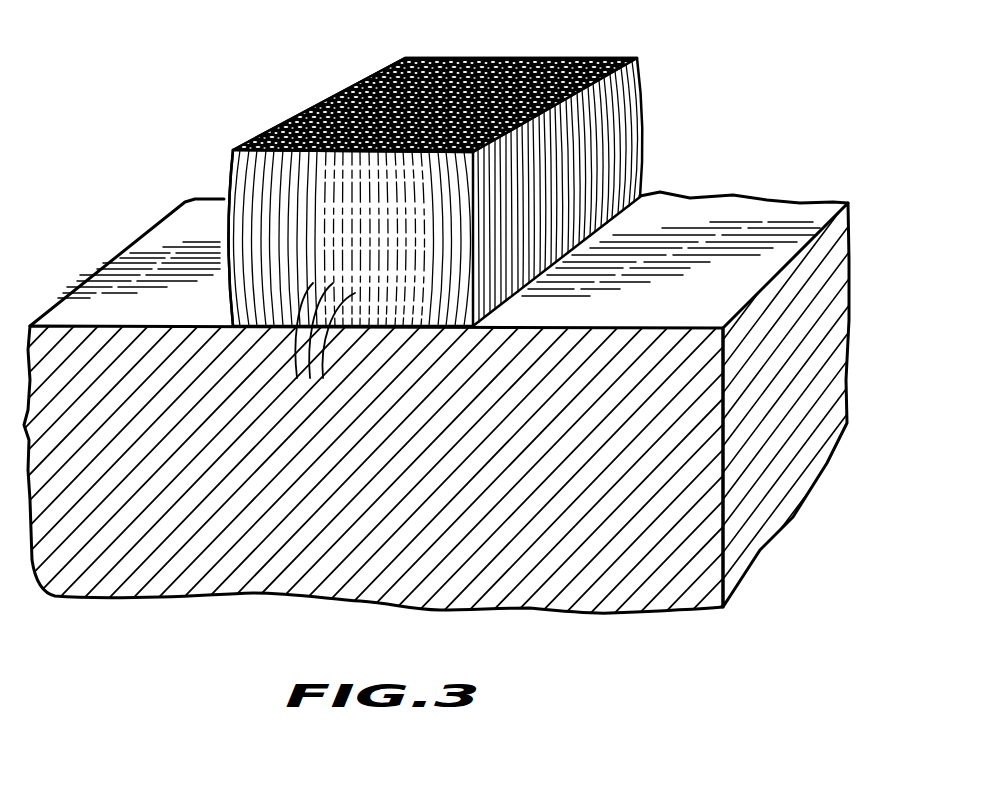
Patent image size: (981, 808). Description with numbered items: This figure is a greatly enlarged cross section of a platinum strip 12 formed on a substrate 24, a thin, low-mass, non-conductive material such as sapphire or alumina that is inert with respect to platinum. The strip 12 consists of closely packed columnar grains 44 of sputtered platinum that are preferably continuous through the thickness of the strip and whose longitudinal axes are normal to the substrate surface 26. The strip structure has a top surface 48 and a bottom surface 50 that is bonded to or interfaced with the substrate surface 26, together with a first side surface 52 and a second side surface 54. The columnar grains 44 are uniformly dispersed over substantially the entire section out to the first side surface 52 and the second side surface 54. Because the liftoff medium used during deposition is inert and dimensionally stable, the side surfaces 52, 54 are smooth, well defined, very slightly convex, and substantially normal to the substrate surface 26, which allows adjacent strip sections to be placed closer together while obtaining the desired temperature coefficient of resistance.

The platinum strip 12 is at (657, 111).
The substrate 24 is at (618, 572).
The substrate surface 26 is at (745, 215).
The columnar grains 44 is at (325, 345).
The top surface 48 is at (553, 60).
The bottom surface 50 is at (455, 328).
The first side surface 52 is at (223, 235).
The second side surface 54 is at (517, 258).